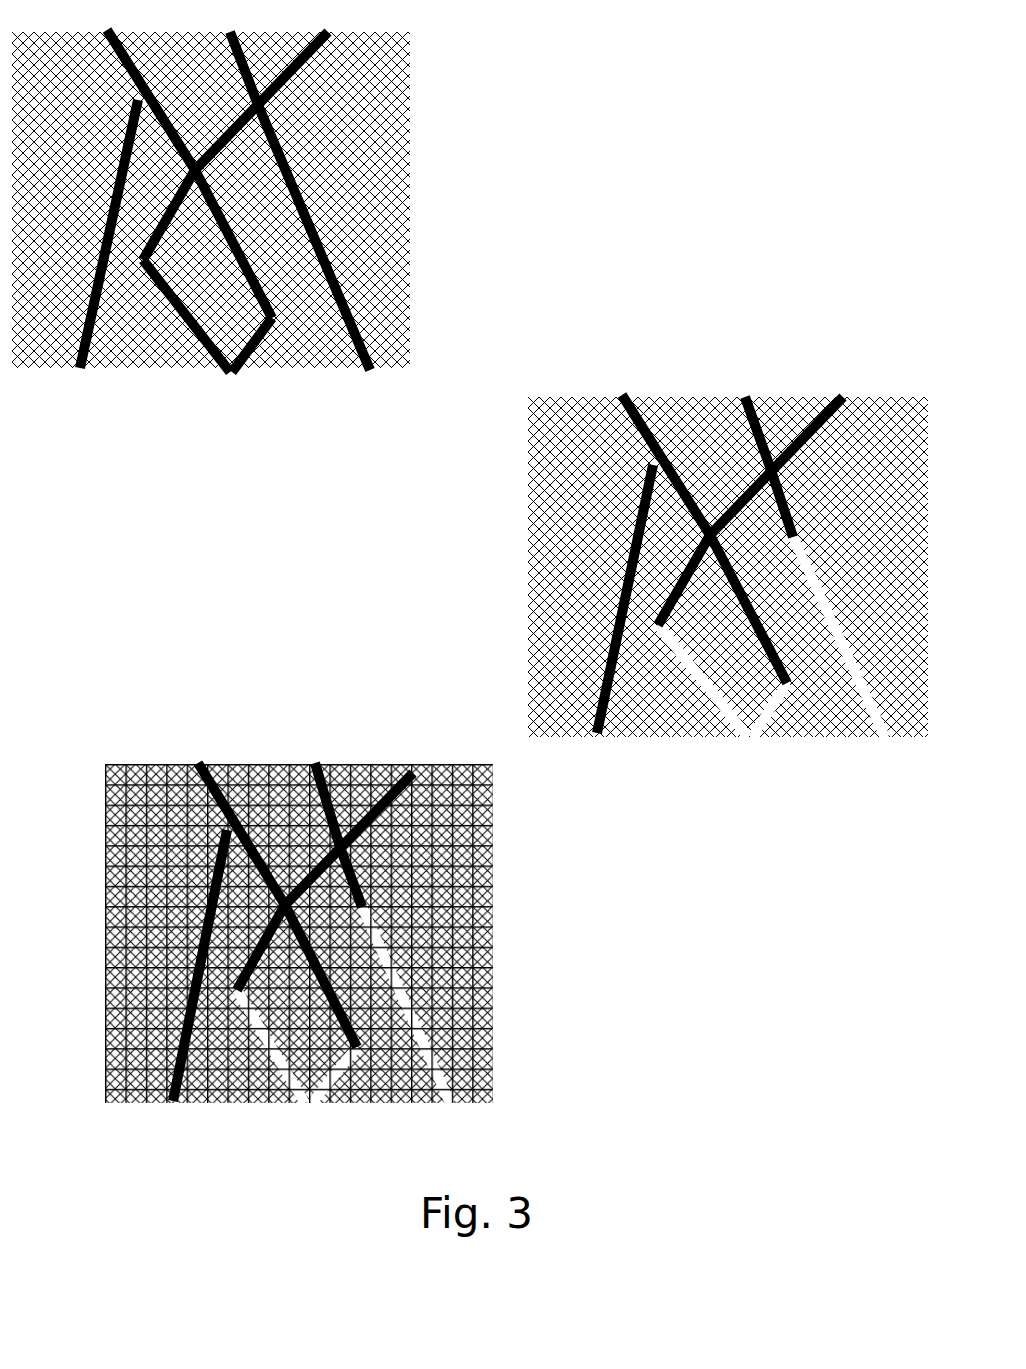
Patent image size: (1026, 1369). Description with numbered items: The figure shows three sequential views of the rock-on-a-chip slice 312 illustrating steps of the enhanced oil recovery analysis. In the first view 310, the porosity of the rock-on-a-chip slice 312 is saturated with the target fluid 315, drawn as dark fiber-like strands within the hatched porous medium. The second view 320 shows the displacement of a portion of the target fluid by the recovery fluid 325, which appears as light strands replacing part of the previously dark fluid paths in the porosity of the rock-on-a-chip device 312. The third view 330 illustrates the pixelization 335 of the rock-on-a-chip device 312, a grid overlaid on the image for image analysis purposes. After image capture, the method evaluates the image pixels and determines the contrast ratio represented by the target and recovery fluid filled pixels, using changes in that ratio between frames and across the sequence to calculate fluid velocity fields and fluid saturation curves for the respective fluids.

The view 310 is at (217, 269).
The rock-on-a-chip slice 312 is at (412, 159).
The target fluid 315 is at (85, 363).
The view 320 is at (742, 614).
The recovery fluid 325 is at (887, 737).
The view 330 is at (356, 961).
The pixelization 335 is at (477, 901).